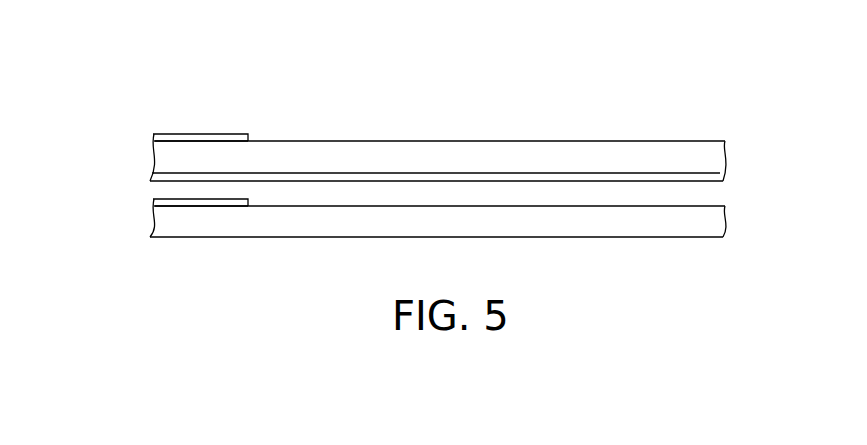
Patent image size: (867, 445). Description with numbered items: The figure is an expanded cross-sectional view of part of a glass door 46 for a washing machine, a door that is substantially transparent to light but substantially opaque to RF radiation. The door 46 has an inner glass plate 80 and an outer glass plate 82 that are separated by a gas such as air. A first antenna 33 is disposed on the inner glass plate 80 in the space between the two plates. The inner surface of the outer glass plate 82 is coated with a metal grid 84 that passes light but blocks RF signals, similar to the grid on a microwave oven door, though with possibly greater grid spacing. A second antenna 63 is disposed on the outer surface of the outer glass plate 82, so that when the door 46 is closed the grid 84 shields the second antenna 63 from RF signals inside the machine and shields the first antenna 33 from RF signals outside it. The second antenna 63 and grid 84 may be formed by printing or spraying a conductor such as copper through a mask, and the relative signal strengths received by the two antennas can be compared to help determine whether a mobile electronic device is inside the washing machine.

The glass door 46 is at (100, 190).
The second antenna 63 is at (202, 133).
The metal grid 84 is at (441, 172).
The outer glass plate 82 is at (630, 140).
The first antenna 33 is at (200, 207).
The inner glass plate 80 is at (627, 238).